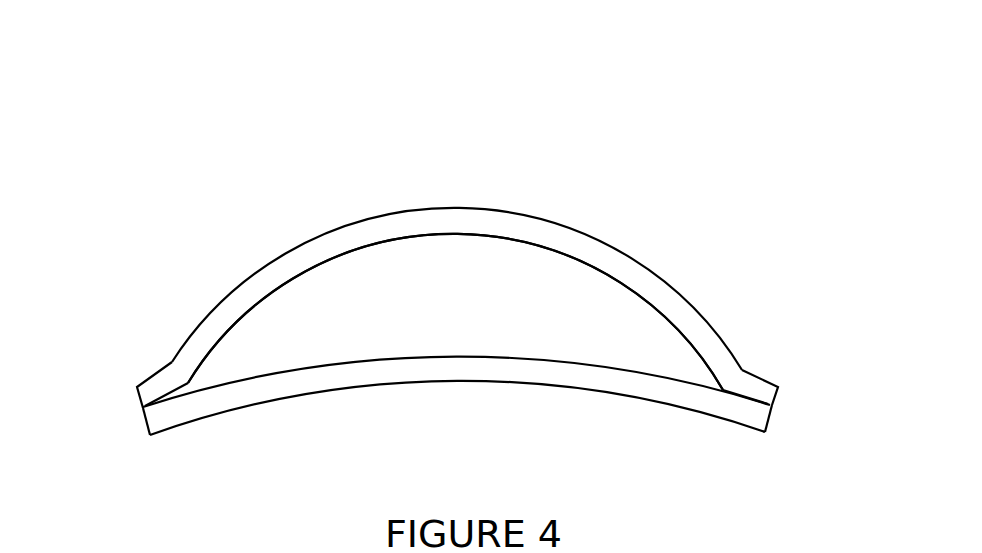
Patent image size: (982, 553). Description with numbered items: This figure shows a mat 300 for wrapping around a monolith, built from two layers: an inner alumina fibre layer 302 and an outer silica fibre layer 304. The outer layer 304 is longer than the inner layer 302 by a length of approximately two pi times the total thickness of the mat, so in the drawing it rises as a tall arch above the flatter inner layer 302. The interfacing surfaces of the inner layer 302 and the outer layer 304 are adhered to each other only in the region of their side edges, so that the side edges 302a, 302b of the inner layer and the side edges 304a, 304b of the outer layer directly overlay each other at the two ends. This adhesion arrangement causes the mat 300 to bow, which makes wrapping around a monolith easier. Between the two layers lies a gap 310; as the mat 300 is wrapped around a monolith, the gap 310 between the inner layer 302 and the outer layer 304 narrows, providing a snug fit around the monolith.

The mat 300 is at (633, 170).
The inner alumina fibre layer 302 is at (418, 372).
The side edge of inner layer 302a is at (147, 425).
The side edge of inner layer 302b is at (768, 418).
The outer silica fibre layer 304 is at (470, 208).
The side edge of outer layer 304a is at (132, 400).
The side edge of outer layer 304b is at (780, 400).
The gap 310 is at (338, 296).